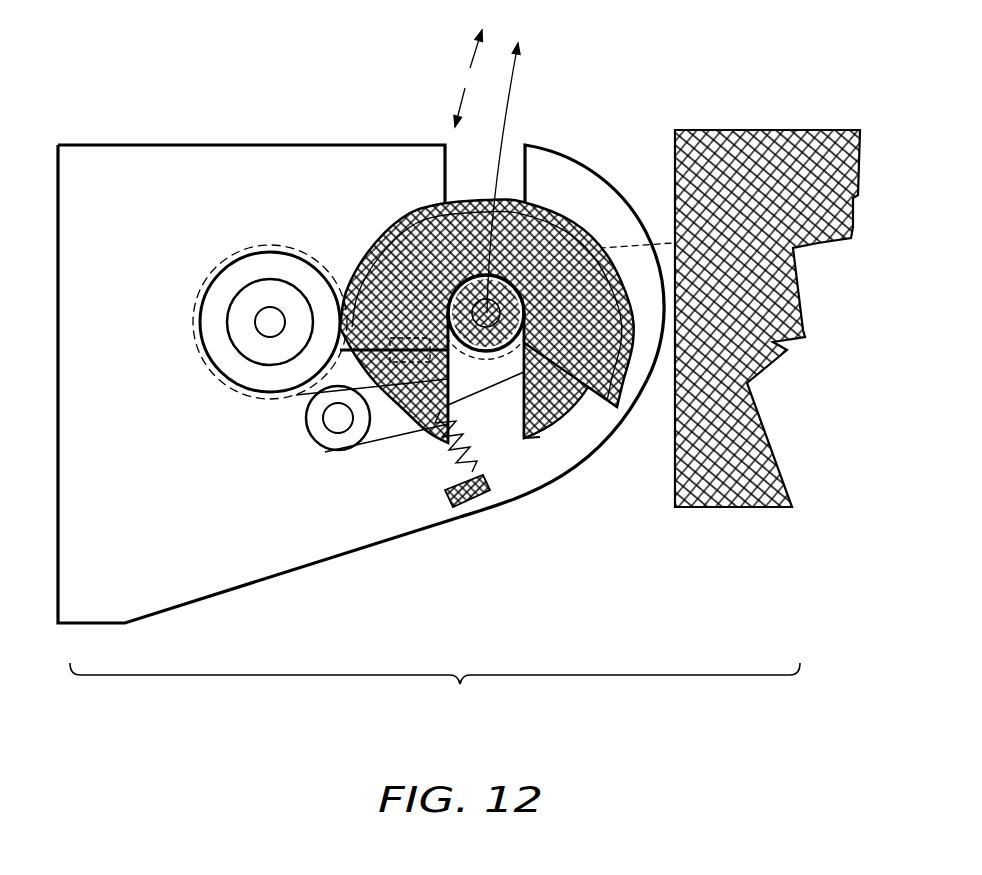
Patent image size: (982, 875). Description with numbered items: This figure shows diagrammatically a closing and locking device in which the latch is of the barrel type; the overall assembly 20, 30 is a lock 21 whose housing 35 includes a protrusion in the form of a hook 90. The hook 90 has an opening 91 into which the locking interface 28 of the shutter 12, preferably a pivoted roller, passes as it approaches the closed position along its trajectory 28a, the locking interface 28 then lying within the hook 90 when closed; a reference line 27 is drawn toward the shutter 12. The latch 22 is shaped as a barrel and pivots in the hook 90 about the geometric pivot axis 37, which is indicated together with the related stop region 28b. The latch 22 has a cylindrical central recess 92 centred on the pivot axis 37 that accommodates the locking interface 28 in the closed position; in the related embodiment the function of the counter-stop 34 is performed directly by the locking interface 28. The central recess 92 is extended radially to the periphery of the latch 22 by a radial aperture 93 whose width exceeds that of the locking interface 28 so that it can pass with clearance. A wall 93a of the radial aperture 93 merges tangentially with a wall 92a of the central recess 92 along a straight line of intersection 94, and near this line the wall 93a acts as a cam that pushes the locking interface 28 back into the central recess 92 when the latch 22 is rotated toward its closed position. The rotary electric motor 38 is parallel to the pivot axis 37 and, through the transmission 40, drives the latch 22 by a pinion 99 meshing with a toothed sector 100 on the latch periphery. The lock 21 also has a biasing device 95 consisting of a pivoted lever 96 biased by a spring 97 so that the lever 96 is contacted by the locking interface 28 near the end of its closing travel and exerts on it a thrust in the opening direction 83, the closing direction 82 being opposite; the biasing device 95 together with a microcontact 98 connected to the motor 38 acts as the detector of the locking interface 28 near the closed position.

The shutter 12 is at (757, 150).
The drive mechanism 20 is at (435, 695).
The cartridge drive 30 is at (435, 695).
The lock 21 is at (148, 170).
The latch 22 is at (430, 245).
The reference line 27 is at (662, 253).
The locking interface 28 is at (525, 293).
The counter-stop 34 is at (503, 296).
The trajectory 28a is at (512, 78).
The shaft stop 28b is at (570, 408).
The housing 35 is at (195, 145).
The geometric pivot axis 37 is at (561, 403).
The rotary electric motor 38 is at (225, 355).
The transmission 40 is at (237, 280).
The closing direction 82 is at (458, 97).
The opening direction 83 is at (470, 60).
The hook 90 is at (570, 160).
The opening 91 is at (515, 135).
The cylindrical central recess 92 is at (463, 360).
The wall of the central recess 92a is at (527, 311).
The radial aperture 93 is at (503, 452).
The wall of the radial aperture 93a is at (523, 437).
The straight line of intersection 94 is at (527, 336).
The biasing device 95 is at (325, 450).
The pivoted lever 96 is at (510, 372).
The spring 97 is at (445, 466).
The microcontact 98 is at (405, 334).
The pinion 99 is at (200, 265).
The toothed sector 100 is at (398, 235).